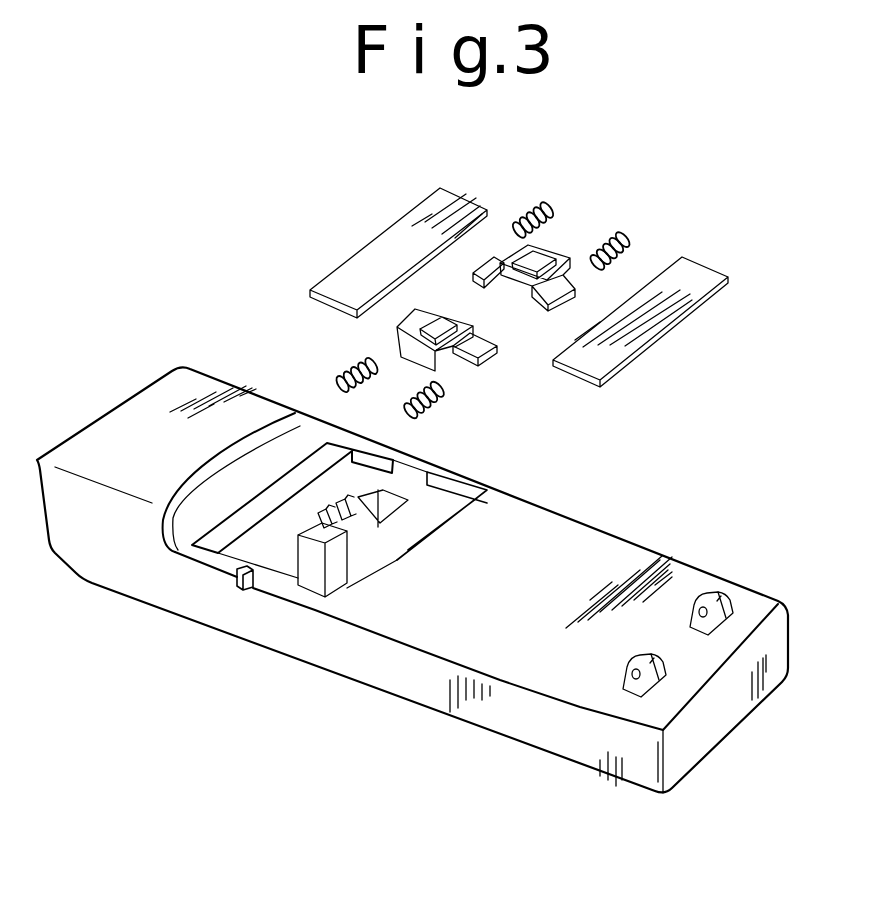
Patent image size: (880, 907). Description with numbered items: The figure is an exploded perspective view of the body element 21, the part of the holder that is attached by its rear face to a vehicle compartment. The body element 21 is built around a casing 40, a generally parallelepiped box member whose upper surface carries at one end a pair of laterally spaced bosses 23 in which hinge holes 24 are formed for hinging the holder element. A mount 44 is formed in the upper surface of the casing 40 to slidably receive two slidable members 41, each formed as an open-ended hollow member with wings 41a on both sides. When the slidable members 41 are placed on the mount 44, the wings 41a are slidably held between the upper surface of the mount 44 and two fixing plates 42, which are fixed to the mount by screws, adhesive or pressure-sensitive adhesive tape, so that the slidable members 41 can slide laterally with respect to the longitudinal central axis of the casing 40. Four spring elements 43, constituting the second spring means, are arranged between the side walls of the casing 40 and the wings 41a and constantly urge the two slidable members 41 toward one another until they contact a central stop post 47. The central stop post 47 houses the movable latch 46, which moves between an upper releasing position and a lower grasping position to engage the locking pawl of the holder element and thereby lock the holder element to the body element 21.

The body element 21 is at (557, 467).
The bosses 23 is at (730, 603).
The hinge holes 24 is at (705, 632).
The casing 40 is at (158, 395).
The slidable members 41 is at (400, 352).
The wings 41a is at (490, 360).
The fixing plates 42 is at (380, 248).
The spring elements 43 is at (413, 392).
The mount 44 is at (393, 576).
The movable latch 46 is at (347, 510).
The central stop post 47 is at (298, 553).